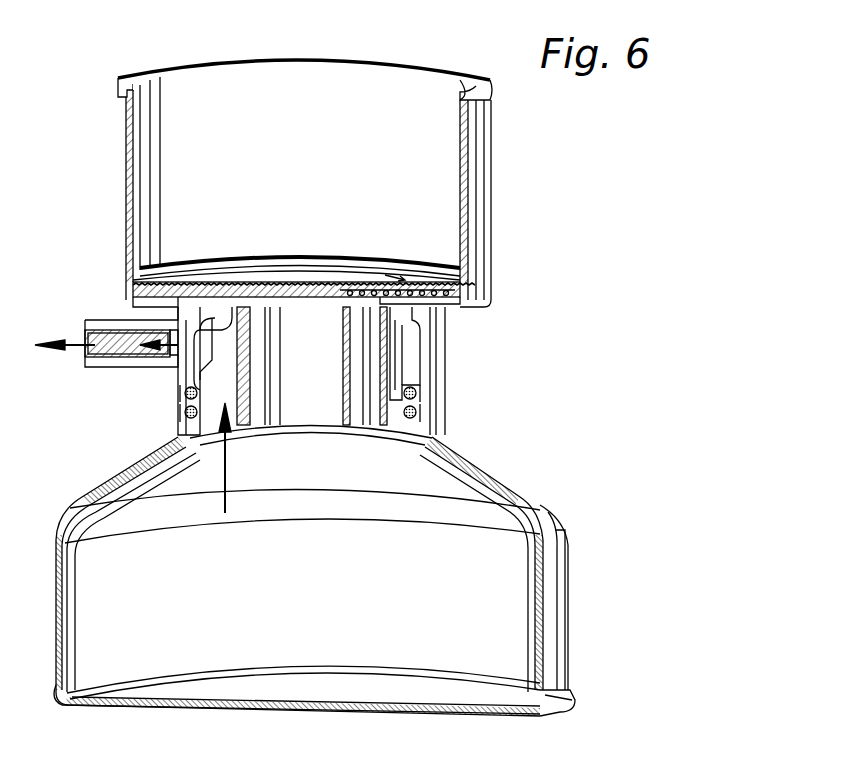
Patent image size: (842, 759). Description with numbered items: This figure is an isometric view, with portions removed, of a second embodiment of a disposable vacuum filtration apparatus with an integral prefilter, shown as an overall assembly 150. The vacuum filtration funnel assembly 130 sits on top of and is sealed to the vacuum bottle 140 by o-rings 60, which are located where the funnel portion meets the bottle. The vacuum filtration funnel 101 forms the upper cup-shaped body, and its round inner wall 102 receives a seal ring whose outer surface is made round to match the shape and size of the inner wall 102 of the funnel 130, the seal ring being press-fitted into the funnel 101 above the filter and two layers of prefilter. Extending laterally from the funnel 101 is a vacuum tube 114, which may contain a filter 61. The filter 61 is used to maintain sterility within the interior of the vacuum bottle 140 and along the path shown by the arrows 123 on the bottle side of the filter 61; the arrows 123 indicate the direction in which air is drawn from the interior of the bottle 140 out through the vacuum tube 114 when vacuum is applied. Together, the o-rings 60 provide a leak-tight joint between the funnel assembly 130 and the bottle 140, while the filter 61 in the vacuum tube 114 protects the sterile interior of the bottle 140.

The inner wall 102 is at (176, 86).
The vacuum filtration funnel assembly 130 is at (512, 178).
The vacuum filtration funnel 101 is at (466, 246).
The vacuum tube 114 is at (116, 321).
The arrows 123 is at (75, 350).
The filter 61 is at (120, 355).
The o-rings 60 is at (416, 393).
The vacuum bottle 140 is at (604, 610).
The filtration assembly 150 is at (708, 698).